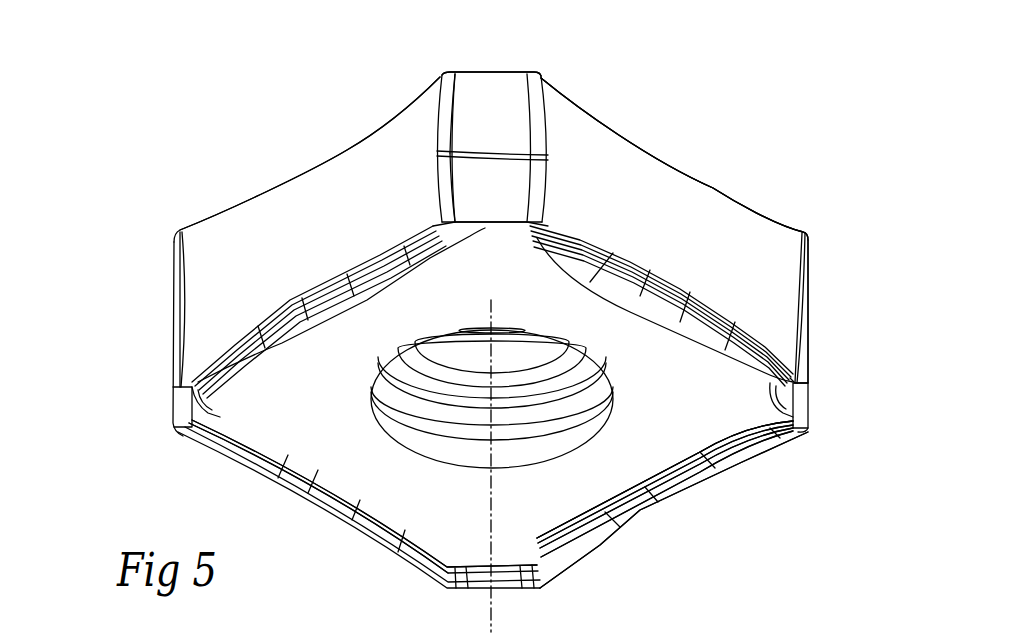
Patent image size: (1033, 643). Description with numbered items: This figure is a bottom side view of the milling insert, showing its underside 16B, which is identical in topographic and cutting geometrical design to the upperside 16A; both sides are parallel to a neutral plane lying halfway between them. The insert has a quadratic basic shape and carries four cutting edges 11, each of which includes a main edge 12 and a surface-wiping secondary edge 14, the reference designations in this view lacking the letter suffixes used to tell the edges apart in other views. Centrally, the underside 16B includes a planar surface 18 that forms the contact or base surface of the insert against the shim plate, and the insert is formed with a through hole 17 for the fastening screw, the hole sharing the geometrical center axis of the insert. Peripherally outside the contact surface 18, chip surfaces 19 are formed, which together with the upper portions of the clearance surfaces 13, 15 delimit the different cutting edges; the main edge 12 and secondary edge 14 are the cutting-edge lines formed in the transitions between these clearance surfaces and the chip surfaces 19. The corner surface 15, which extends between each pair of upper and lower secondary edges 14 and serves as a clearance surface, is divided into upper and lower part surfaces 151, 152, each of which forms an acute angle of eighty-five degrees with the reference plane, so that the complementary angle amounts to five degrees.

The cutting edge 11 is at (716, 190).
The main edge 12 is at (344, 148).
The clearance surface 13 is at (664, 227).
The secondary edge 14 is at (496, 73).
The corner surface 15 is at (504, 197).
The upper part surface 151 is at (460, 195).
The lower part surface 152 is at (468, 126).
The upperside 16A is at (273, 170).
The underside 16B is at (677, 502).
The through hole 17 is at (400, 405).
The planar surface 18 is at (688, 410).
The chip surface 19 is at (340, 490).